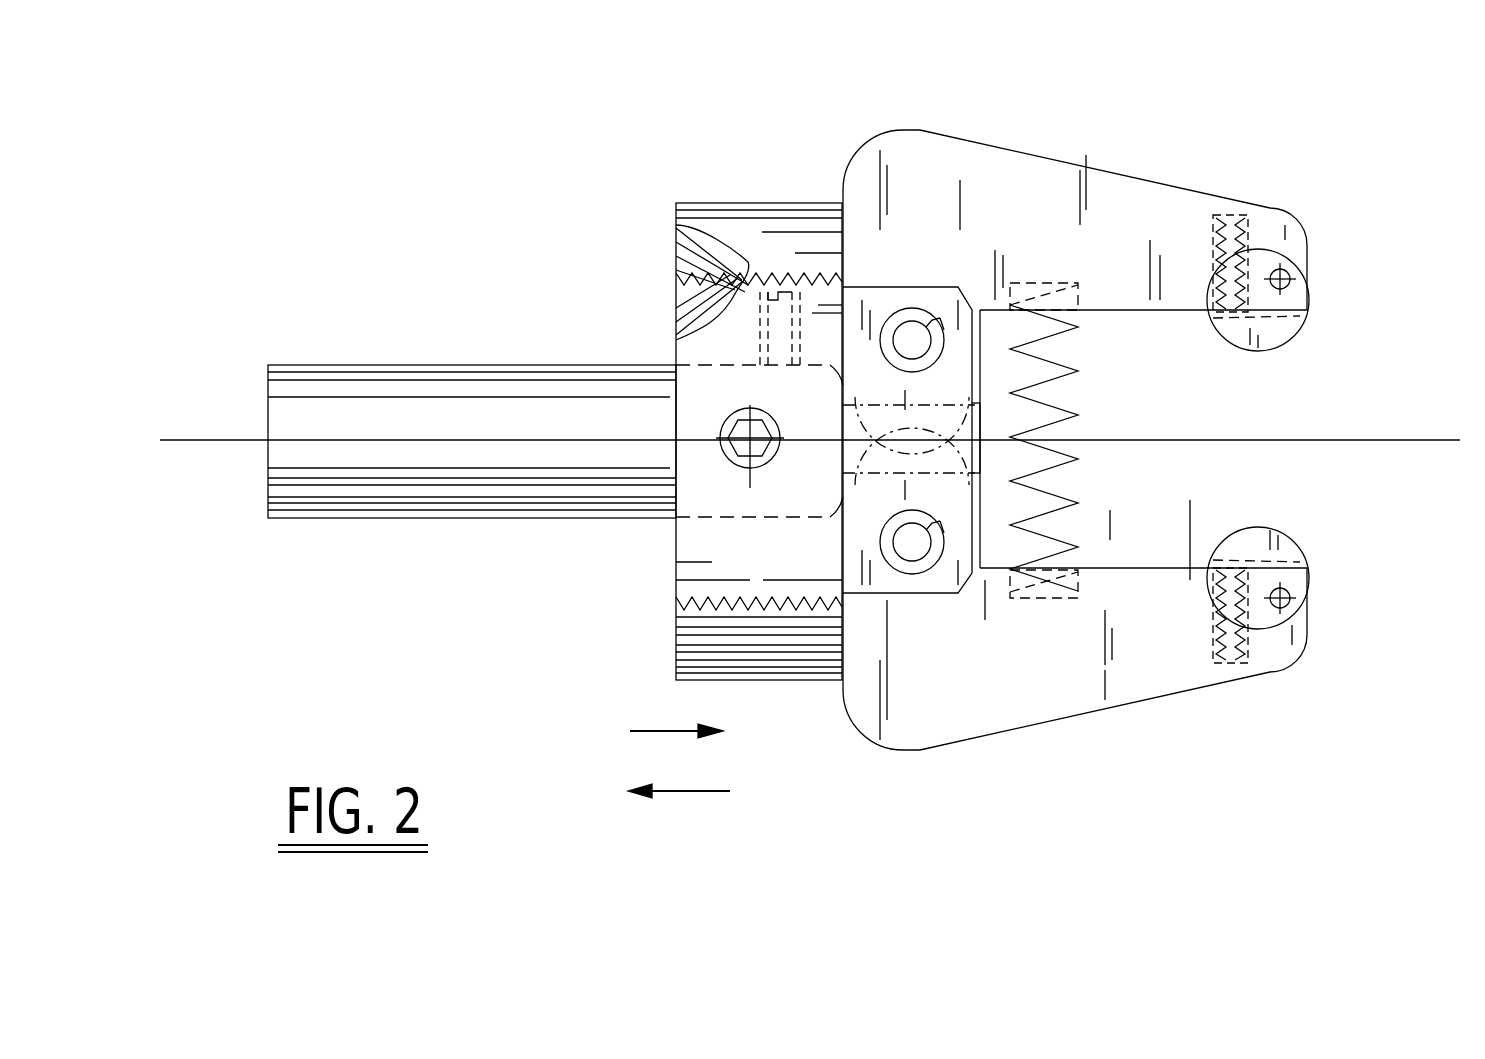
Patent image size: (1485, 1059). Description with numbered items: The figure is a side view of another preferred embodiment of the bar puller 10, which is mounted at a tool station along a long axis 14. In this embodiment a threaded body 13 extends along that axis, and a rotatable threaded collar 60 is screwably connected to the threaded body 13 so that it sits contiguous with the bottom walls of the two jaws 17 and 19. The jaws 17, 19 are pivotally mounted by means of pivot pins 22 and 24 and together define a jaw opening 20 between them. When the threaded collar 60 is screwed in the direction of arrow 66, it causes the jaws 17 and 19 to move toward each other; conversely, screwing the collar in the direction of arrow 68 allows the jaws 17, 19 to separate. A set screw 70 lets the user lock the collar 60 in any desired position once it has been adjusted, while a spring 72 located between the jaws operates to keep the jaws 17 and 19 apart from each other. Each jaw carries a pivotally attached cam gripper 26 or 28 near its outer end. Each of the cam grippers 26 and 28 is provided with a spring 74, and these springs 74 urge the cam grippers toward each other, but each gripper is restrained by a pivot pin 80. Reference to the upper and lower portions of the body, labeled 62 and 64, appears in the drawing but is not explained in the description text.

The bar puller 10 is at (1043, 391).
The threaded body 13 is at (614, 342).
The long axis 14 is at (207, 440).
The jaw 17 is at (1133, 180).
The jaw 19 is at (1148, 675).
The jaw opening 20 is at (1232, 412).
The pivot pin 22 is at (912, 310).
The pivot pin 24 is at (920, 572).
The cam gripper 26 is at (1285, 330).
The cam gripper 28 is at (1290, 555).
The threaded collar 60 is at (738, 202).
The upper body corner 62 is at (853, 165).
The lower body corner 64 is at (843, 690).
The arrow 66 is at (648, 731).
The arrow 68 is at (705, 792).
The set screw 70 is at (730, 462).
The spring 72 is at (1080, 474).
The spring 74 is at (1258, 215).
The pivot pin 80 is at (1286, 275).